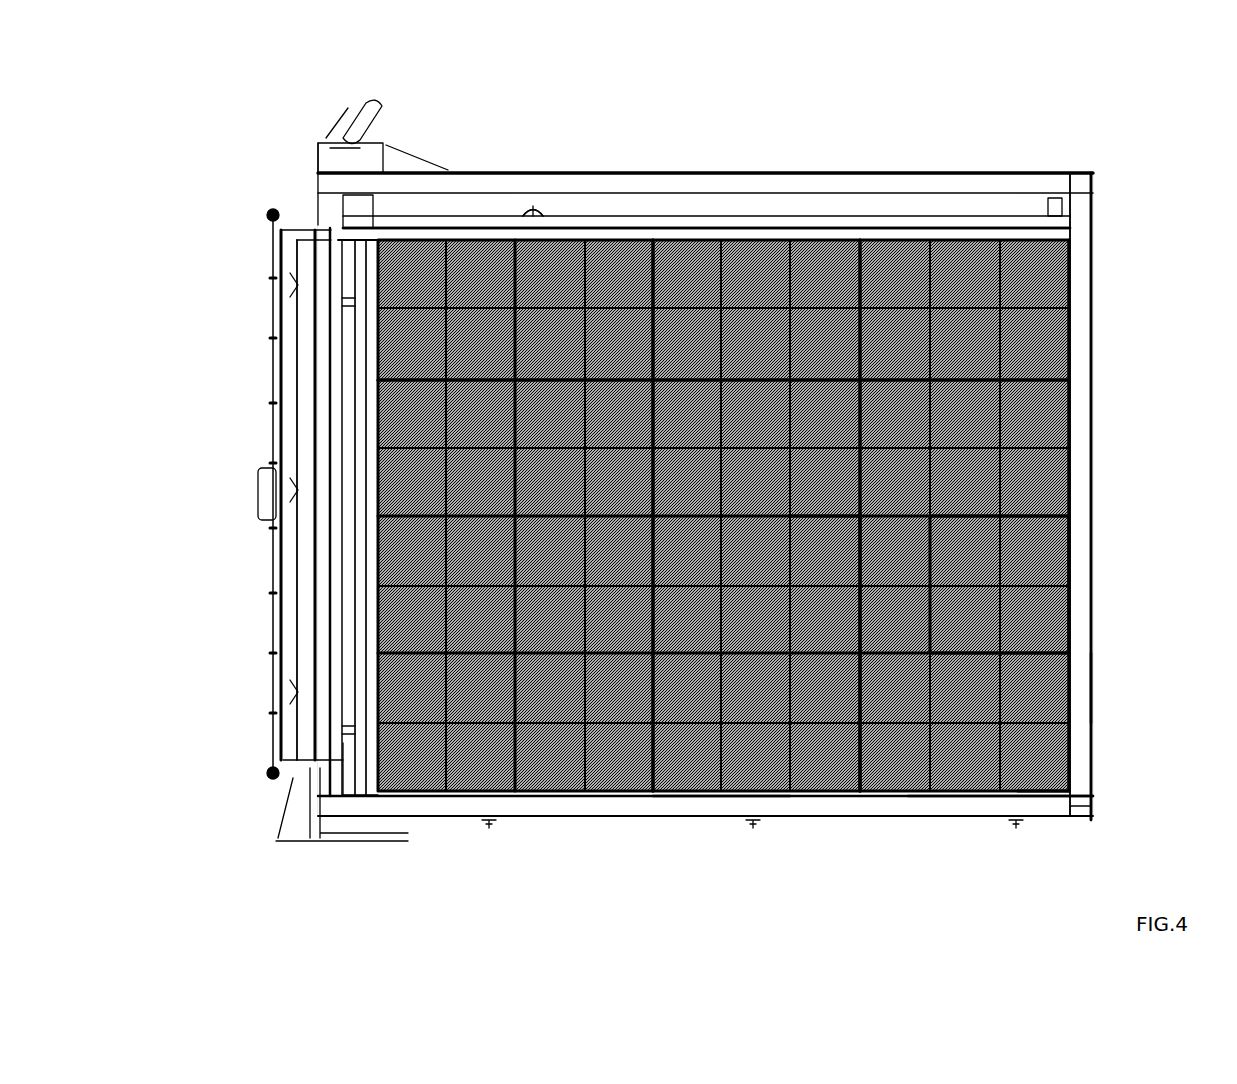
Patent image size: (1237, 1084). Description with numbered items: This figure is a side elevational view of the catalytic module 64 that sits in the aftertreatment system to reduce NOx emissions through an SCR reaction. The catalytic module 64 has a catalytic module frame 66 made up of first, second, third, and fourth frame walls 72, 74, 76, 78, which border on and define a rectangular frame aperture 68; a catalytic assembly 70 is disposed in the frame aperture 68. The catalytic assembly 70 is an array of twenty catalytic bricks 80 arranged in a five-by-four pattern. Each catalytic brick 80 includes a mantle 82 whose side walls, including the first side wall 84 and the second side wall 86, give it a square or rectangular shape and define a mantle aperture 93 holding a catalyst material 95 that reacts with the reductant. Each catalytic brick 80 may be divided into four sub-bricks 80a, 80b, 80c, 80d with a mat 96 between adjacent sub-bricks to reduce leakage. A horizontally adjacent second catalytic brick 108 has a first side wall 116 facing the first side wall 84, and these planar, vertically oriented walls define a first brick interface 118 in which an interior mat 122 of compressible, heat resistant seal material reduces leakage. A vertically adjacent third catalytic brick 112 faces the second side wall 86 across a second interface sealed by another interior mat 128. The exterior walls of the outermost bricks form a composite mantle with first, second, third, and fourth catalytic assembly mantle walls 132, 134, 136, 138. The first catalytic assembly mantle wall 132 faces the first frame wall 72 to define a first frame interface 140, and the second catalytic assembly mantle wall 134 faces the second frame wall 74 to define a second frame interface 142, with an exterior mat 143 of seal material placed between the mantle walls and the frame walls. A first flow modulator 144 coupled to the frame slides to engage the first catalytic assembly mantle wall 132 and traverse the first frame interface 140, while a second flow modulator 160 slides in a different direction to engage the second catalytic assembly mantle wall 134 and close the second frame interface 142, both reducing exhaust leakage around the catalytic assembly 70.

The catalytic module 64 is at (960, 130).
The catalytic module frame 66 is at (1085, 162).
The frame aperture 68 is at (1052, 284).
The catalytic assembly 70 is at (1035, 383).
The first frame wall 72 is at (470, 195).
The second frame wall 74 is at (330, 433).
The third frame wall 76 is at (960, 805).
The fourth frame wall 78 is at (1068, 320).
The catalytic brick 80 is at (968, 540).
The sub-brick 80a is at (510, 785).
The sub-brick 80b is at (528, 785).
The sub-brick 80c is at (583, 785).
The sub-brick 80d is at (612, 770).
The mantle 82 is at (1067, 545).
The first side wall 84 is at (843, 500).
The second side wall 86 is at (855, 535).
The mantle aperture 93 is at (1032, 772).
The catalyst material 95 is at (1032, 768).
The mat 96 is at (755, 715).
The second catalytic brick 108 is at (680, 528).
The third catalytic brick 112 is at (888, 400).
The first side wall of second catalytic brick 116 is at (783, 690).
The first brick interface 118 is at (793, 632).
The interior mat 122 is at (758, 525).
The interior mat 128 is at (1010, 448).
The first catalytic assembly mantle wall 132 is at (607, 232).
The second catalytic assembly mantle wall 134 is at (370, 510).
The third catalytic assembly mantle wall 136 is at (690, 790).
The fourth catalytic assembly mantle wall 138 is at (1068, 690).
The first frame interface 140 is at (1068, 232).
The second frame interface 142 is at (375, 790).
The exterior mat 143 is at (370, 605).
The first flow modulator 144 is at (572, 208).
The second flow modulator 160 is at (252, 478).